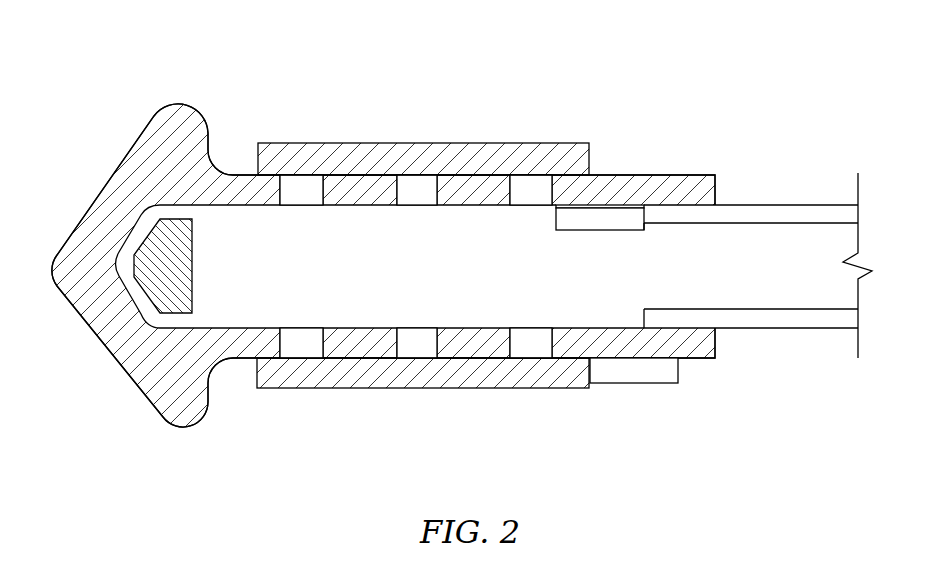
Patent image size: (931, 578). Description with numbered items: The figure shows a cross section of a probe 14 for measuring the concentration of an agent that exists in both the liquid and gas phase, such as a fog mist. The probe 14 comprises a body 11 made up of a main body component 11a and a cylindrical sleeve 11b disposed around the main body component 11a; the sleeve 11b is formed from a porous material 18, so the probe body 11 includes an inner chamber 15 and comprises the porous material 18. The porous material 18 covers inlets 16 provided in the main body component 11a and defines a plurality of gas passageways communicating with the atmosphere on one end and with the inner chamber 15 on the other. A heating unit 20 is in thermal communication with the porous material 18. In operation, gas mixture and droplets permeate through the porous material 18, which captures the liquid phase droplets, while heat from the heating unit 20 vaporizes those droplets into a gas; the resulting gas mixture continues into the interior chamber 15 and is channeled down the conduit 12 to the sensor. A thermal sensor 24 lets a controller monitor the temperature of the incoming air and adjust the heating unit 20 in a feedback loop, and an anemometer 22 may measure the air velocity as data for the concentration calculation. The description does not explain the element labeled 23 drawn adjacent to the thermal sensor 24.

The probe body 11 is at (242, 378).
The main body component 11a is at (184, 118).
The cylindrical sleeve 11b is at (387, 162).
The conduit 12 is at (785, 205).
The probe 14 is at (80, 108).
The inner chamber 15 is at (232, 257).
The inlets 16 is at (300, 190).
The porous material 18 is at (338, 158).
The heating unit 20 is at (133, 243).
The anemometer 22 is at (633, 385).
The adhesive layer 23 is at (608, 210).
The thermal sensor 24 is at (623, 220).